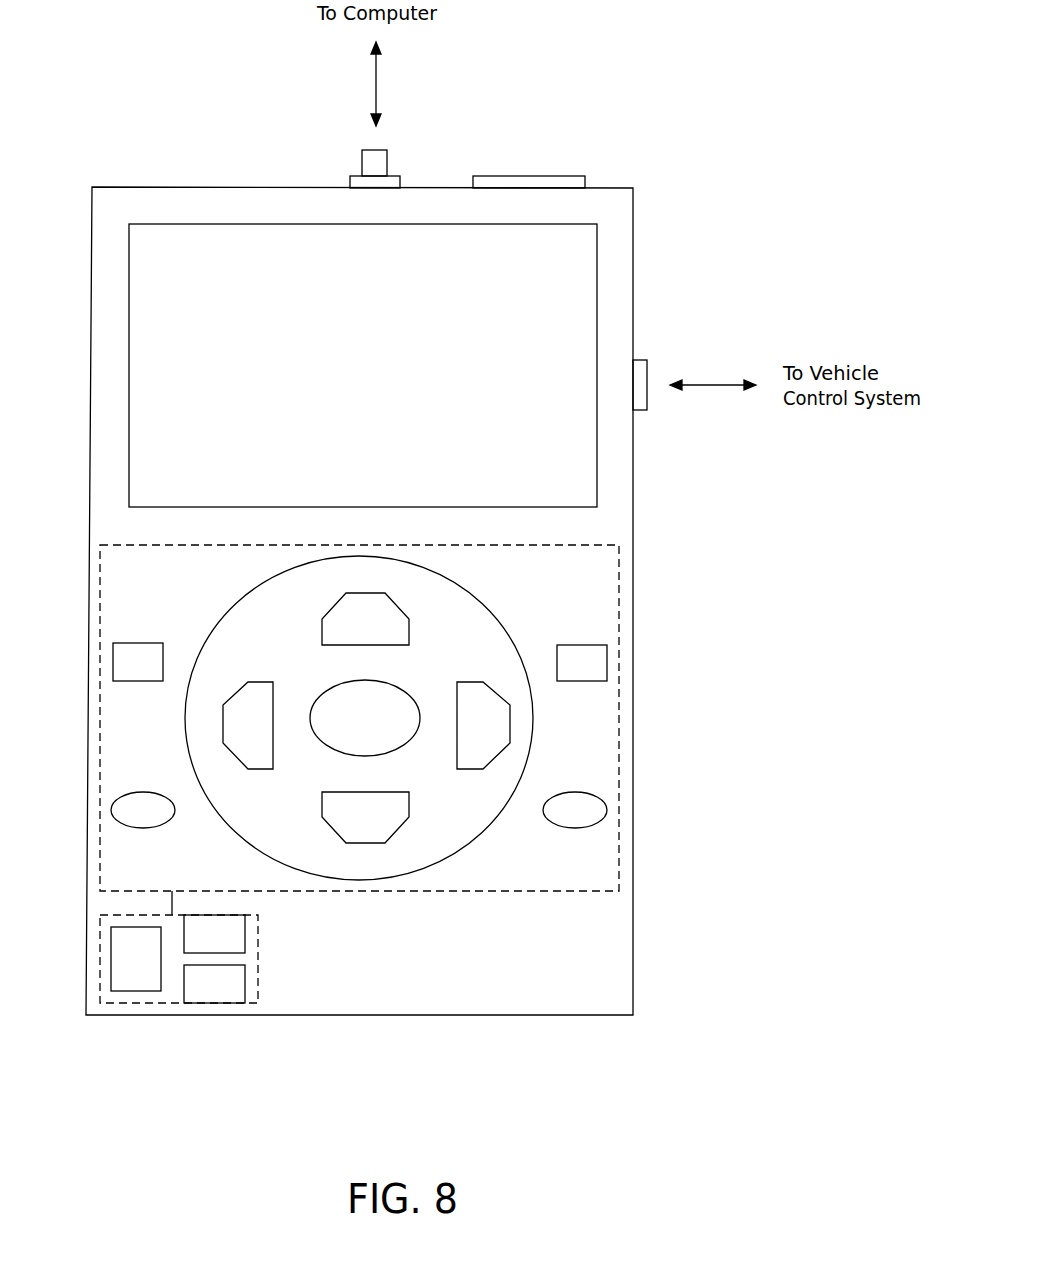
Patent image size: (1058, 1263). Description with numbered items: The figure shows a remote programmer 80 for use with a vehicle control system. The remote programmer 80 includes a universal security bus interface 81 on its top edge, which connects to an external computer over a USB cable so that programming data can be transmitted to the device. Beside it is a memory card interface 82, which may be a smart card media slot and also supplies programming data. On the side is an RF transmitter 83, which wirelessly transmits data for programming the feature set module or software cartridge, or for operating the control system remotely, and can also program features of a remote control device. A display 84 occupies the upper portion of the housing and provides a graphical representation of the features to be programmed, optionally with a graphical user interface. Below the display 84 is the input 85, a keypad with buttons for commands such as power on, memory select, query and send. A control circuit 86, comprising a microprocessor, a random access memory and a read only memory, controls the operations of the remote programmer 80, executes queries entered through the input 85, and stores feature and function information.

The remote programmer 80 is at (92, 212).
The universal security bus (USB) interface 81 is at (362, 163).
The memory card interface 82 is at (473, 178).
The RF transmitter 83 is at (648, 370).
The display 84 is at (598, 286).
The input 85 is at (100, 580).
The control circuit 86 is at (98, 967).